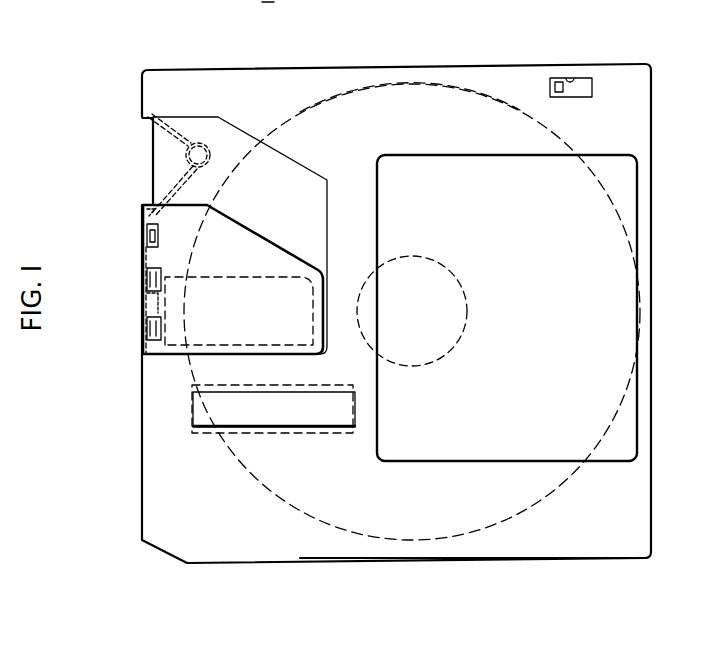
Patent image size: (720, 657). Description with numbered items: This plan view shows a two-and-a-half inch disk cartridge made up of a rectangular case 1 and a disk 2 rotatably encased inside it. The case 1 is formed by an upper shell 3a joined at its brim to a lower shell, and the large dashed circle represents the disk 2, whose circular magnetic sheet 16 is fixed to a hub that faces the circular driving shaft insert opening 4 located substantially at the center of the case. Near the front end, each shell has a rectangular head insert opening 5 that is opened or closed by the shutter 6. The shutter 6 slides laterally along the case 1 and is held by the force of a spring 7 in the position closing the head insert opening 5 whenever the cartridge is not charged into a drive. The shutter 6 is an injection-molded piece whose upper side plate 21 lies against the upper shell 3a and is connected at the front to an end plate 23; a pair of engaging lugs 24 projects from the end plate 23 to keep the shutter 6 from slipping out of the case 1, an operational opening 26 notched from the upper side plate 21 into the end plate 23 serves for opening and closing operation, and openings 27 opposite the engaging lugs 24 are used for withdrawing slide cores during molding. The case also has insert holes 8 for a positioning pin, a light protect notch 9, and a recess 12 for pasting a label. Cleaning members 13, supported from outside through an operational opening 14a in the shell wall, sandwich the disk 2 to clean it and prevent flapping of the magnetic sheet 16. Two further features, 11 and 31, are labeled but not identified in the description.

The case 1 is at (230, 565).
The disk 2 is at (349, 542).
The upper shell 3a is at (583, 549).
The driving shaft insert opening 4 is at (450, 335).
The head insert opening 5 is at (322, 277).
The shutter 6 is at (141, 207).
The spring 7 is at (208, 142).
The insert holes for a positioning pin 8 is at (268, 1).
The light protect notch 9 is at (592, 89).
The detector 11 is at (574, 78).
The recess 12 is at (634, 196).
The cleaning members 13 is at (335, 436).
The operational opening 14a is at (291, 420).
The magnetic sheet 16 is at (398, 86).
The upper side plate 21 is at (240, 245).
The end plate 23 is at (143, 343).
The engaging lugs 24 is at (143, 317).
The operational opening 26 is at (143, 230).
The openings 27 is at (143, 277).
The carriage arm 31 is at (303, 169).